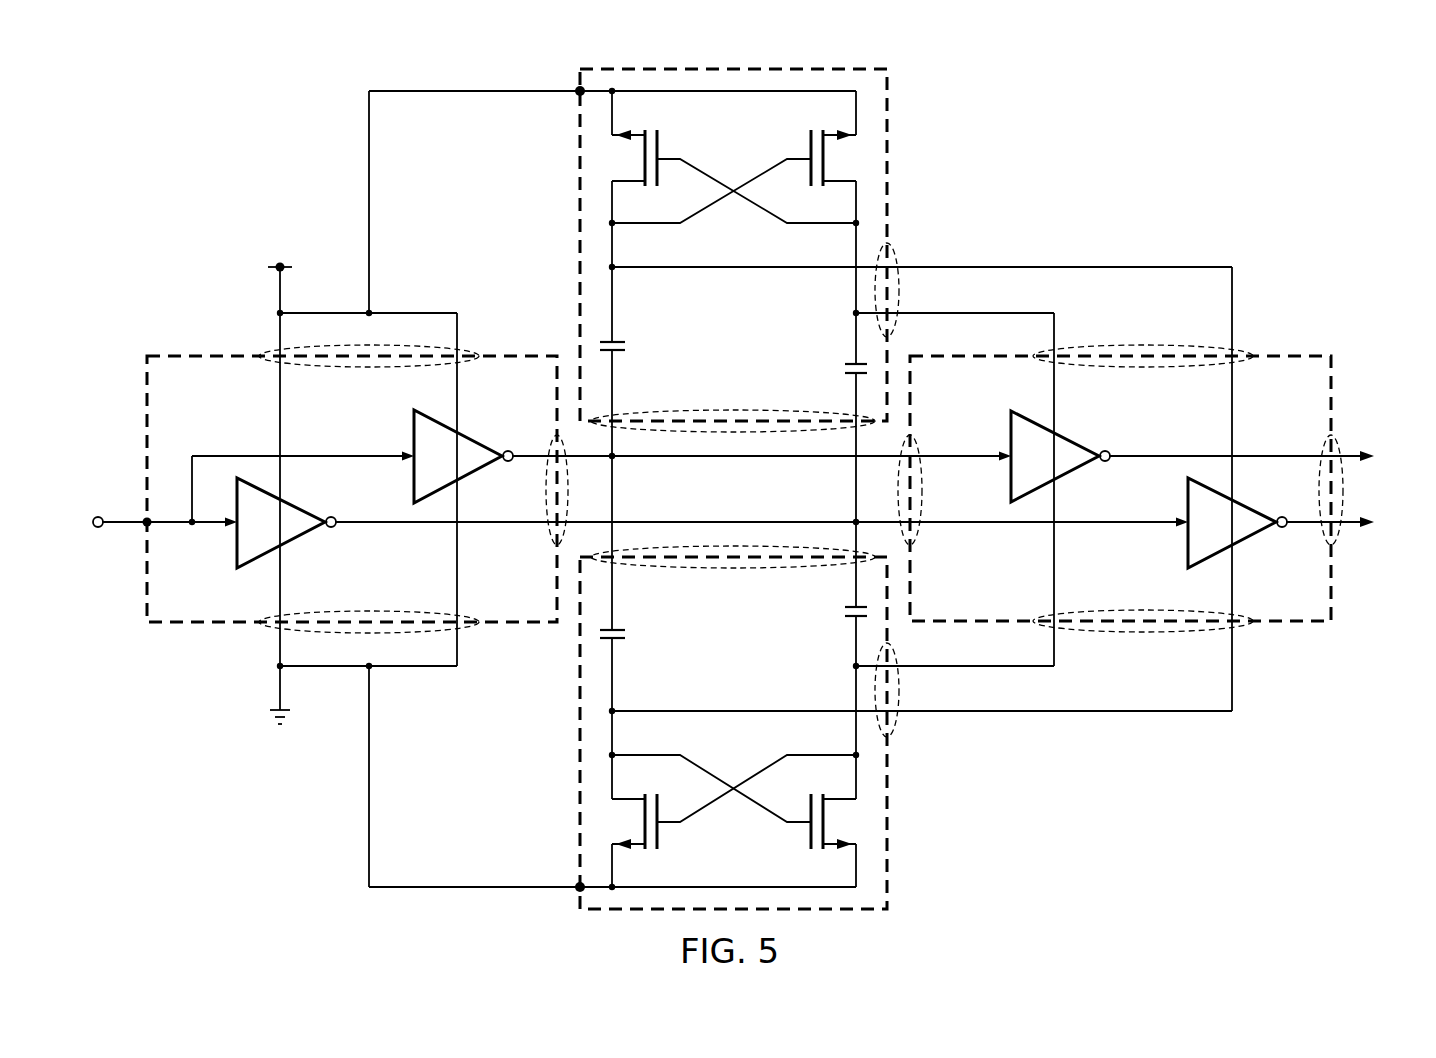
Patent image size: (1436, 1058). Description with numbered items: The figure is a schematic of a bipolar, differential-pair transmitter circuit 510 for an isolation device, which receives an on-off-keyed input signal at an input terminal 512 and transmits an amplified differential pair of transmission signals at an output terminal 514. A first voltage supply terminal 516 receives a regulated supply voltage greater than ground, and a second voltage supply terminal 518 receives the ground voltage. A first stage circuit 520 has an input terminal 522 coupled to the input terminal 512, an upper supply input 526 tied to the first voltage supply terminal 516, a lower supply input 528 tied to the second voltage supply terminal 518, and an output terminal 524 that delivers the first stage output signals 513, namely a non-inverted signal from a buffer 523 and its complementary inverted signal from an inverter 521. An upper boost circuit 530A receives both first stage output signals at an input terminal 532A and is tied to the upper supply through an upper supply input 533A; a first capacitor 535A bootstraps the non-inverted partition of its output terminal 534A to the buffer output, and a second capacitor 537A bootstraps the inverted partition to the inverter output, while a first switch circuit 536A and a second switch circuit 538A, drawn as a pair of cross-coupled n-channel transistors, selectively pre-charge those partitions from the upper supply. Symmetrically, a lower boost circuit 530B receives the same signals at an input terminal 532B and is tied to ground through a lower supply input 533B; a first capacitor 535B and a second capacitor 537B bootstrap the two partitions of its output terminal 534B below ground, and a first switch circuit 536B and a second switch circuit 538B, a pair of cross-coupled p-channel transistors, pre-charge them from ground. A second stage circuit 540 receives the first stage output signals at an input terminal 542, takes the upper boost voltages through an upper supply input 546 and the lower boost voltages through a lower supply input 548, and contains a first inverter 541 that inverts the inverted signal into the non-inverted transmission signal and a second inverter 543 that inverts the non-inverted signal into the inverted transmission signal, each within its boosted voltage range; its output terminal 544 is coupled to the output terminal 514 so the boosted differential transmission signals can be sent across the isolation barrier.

The transmitter circuit 510 is at (318, 98).
The input terminal 512 is at (98, 530).
The first stage output signals 513 is at (365, 526).
The output terminal 514 is at (1356, 452).
The first voltage supply terminal 516 is at (278, 265).
The second voltage supply terminal 518 is at (242, 730).
The first stage circuit 520 is at (230, 352).
The inverter 521 is at (300, 508).
The input terminal 522 is at (137, 514).
The buffer 523 is at (480, 444).
The output terminal 524 is at (545, 490).
The upper supply input 526 is at (355, 370).
The lower supply input 528 is at (326, 610).
The upper boost circuit 530A is at (572, 174).
The lower boost circuit 530B is at (733, 733).
The input terminal 532A is at (717, 434).
The input terminal 532B is at (742, 545).
The upper supply input 533A is at (577, 88).
The lower supply input 533B is at (574, 893).
The output terminal 534A is at (900, 287).
The output terminal 534B is at (900, 687).
The first capacitor 535A is at (627, 345).
The first capacitor 535B is at (627, 635).
The first switch circuit 536A is at (660, 140).
The first switch circuit 536B is at (660, 840).
The second capacitor 537A is at (845, 366).
The second capacitor 537B is at (845, 612).
The second switch circuit 538A is at (808, 143).
The second switch circuit 538B is at (808, 830).
The second stage circuit 540 is at (1274, 350).
The first inverter 541 is at (1262, 535).
The input terminal 542 is at (925, 490).
The second inverter 543 is at (1075, 445).
The output terminal 544 is at (1345, 488).
The upper supply input 546 is at (1145, 345).
The lower supply input 548 is at (1143, 635).